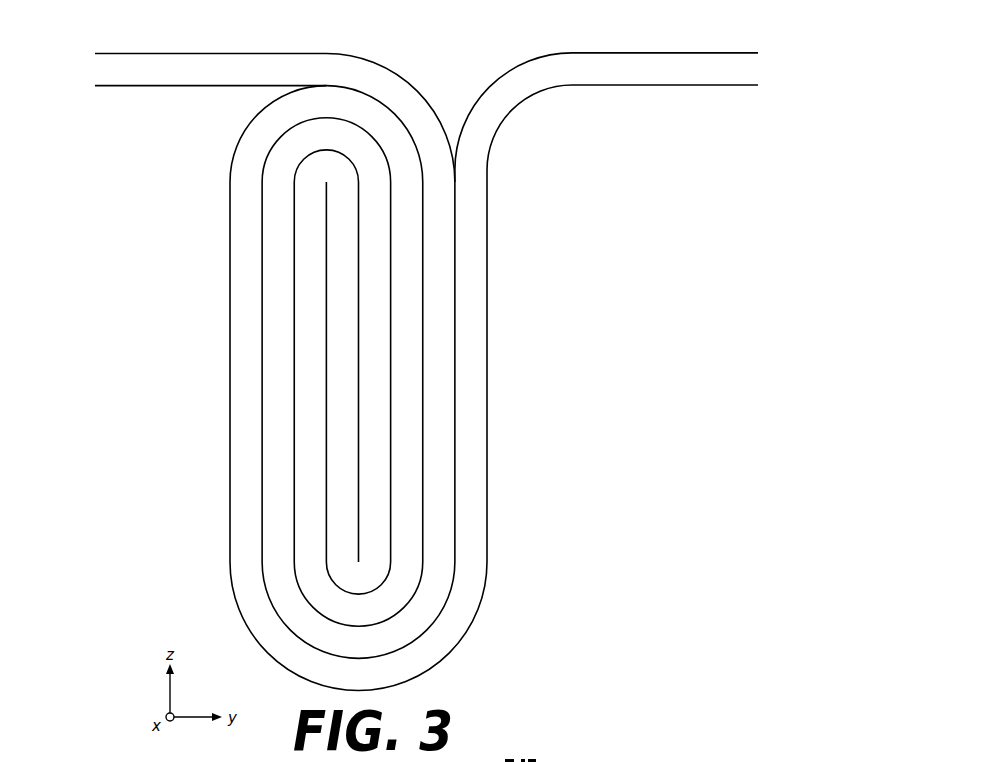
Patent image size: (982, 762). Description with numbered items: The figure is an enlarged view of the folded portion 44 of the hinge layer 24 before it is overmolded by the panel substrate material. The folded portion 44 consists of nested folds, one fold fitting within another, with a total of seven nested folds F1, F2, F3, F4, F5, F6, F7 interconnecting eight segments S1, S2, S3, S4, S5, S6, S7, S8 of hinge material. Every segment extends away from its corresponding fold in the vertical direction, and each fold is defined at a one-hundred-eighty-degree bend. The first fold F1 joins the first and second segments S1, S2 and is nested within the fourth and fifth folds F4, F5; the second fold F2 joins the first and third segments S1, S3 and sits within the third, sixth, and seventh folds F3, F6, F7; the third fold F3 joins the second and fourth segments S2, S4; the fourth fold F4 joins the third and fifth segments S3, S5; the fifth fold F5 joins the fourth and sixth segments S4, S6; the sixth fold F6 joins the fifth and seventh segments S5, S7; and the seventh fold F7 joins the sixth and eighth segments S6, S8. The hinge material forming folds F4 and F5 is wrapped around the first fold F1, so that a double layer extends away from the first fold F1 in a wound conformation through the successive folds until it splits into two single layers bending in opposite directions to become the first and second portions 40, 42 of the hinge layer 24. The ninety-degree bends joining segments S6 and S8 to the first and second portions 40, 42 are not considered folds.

The hinge layer 24 is at (51, 76).
The first portion of the hinge layer 40 is at (125, 84).
The second portion of the hinge layer 42 is at (687, 76).
The folded portion 44 is at (235, 272).
The first segment S1 is at (328, 368).
The second segment S2 is at (296, 368).
The third segment S3 is at (360, 368).
The fourth segment S4 is at (421, 368).
The fifth segment S5 is at (264, 368).
The sixth segment S6 is at (232, 368).
The seventh segment S7 is at (453, 368).
The eighth segment S8 is at (457, 368).
The first fold F1 is at (312, 176).
The second fold F2 is at (346, 589).
The third fold F3 is at (346, 621).
The fourth fold F4 is at (312, 142).
The fifth fold F5 is at (312, 108).
The sixth fold F6 is at (346, 659).
The seventh fold F7 is at (346, 689).